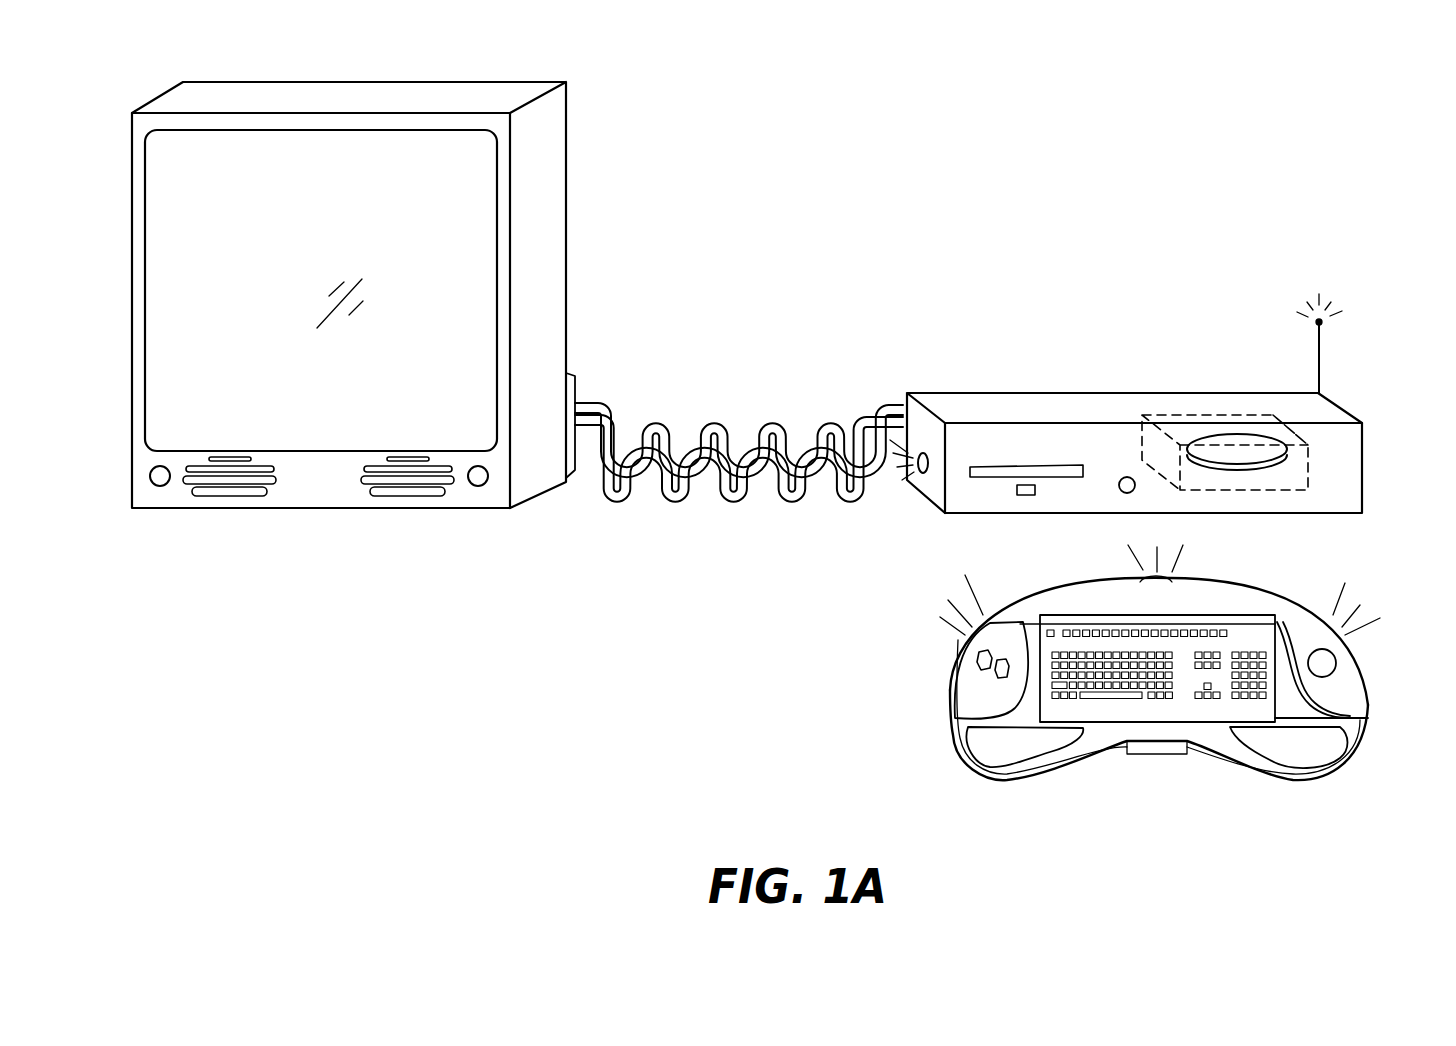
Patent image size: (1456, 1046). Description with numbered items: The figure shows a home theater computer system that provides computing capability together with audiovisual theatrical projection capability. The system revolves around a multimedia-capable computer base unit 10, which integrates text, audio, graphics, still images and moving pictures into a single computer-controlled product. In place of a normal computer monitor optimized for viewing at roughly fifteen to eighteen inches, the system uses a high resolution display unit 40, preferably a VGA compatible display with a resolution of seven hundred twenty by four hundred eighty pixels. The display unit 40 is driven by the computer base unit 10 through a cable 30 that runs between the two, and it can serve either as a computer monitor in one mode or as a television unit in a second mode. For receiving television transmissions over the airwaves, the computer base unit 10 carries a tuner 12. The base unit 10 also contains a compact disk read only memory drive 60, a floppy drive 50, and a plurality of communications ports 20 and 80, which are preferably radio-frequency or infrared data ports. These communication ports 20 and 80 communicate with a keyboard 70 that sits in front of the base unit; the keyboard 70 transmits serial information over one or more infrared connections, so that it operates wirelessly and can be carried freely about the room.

The computer base unit 10 is at (1362, 485).
The tuner 12 is at (1321, 347).
The communications port 20 is at (919, 474).
The cable 30 is at (777, 415).
The display unit 40 is at (546, 289).
The floppy drive 50 is at (1023, 495).
The CD-ROM drive 60 is at (1255, 474).
The keyboard 70 is at (950, 708).
The communications port 80 is at (1121, 497).